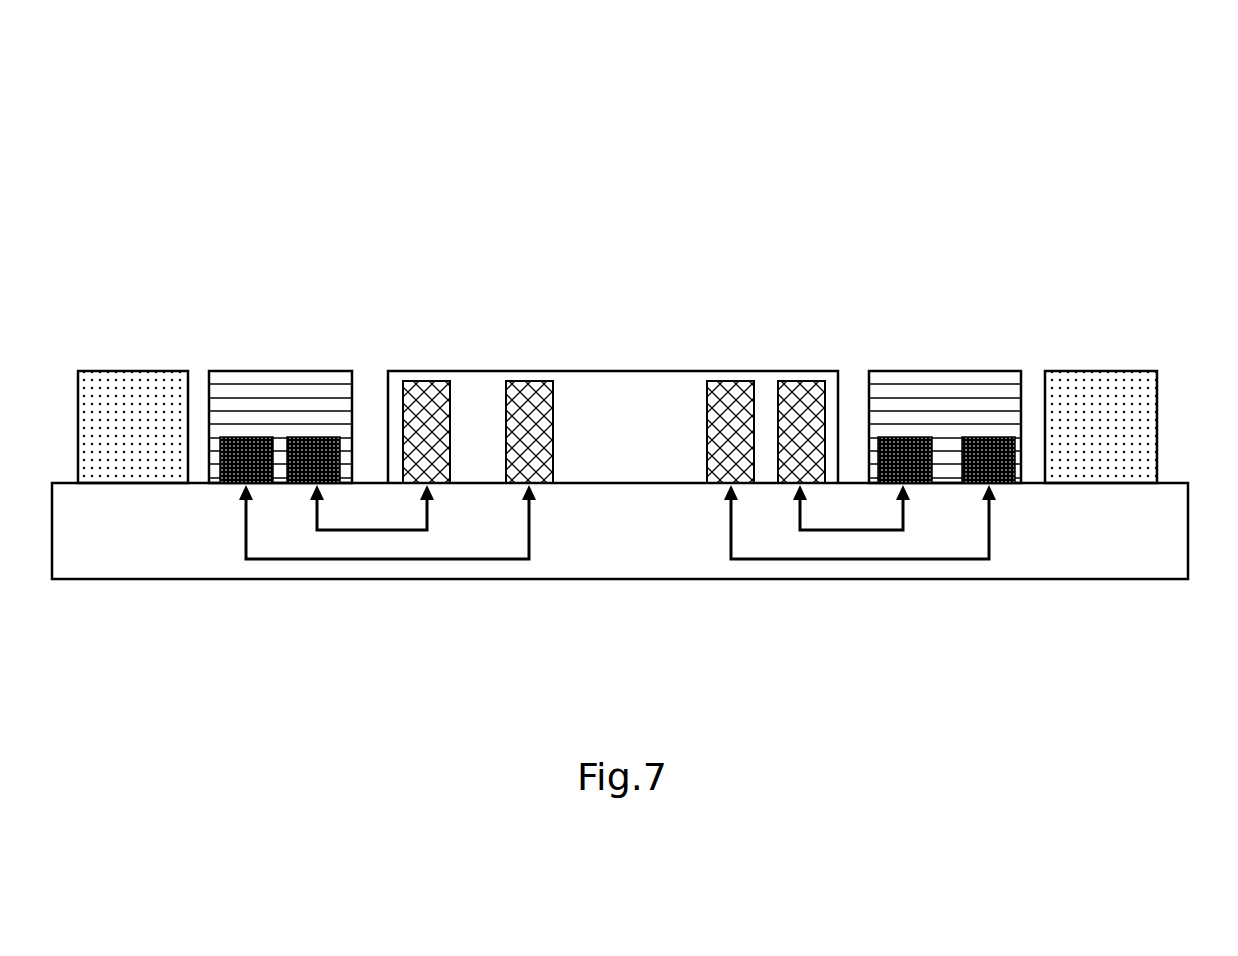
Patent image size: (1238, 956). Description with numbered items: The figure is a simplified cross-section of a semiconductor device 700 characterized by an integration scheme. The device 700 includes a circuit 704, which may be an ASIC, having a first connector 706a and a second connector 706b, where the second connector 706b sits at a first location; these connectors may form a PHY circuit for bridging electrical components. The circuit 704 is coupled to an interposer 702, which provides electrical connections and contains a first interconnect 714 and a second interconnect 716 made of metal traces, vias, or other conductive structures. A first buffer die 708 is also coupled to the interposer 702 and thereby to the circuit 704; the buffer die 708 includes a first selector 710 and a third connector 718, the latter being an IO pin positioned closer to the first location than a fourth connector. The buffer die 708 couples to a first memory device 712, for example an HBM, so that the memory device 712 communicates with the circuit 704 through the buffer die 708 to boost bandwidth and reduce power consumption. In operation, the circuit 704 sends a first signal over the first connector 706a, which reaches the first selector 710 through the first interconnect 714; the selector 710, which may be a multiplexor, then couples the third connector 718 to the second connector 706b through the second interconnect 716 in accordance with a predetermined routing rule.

The semiconductor device 700 is at (928, 167).
The interposer 702 is at (632, 530).
The circuit 704 is at (657, 382).
The first connector 706a is at (428, 408).
The second connector 706b is at (530, 422).
The first buffer die 708 is at (275, 390).
The first selector 710 is at (315, 457).
The first memory device 712 is at (108, 399).
The first interconnect 714 is at (349, 531).
The second interconnect 716 is at (484, 560).
The third connector 718 is at (244, 450).